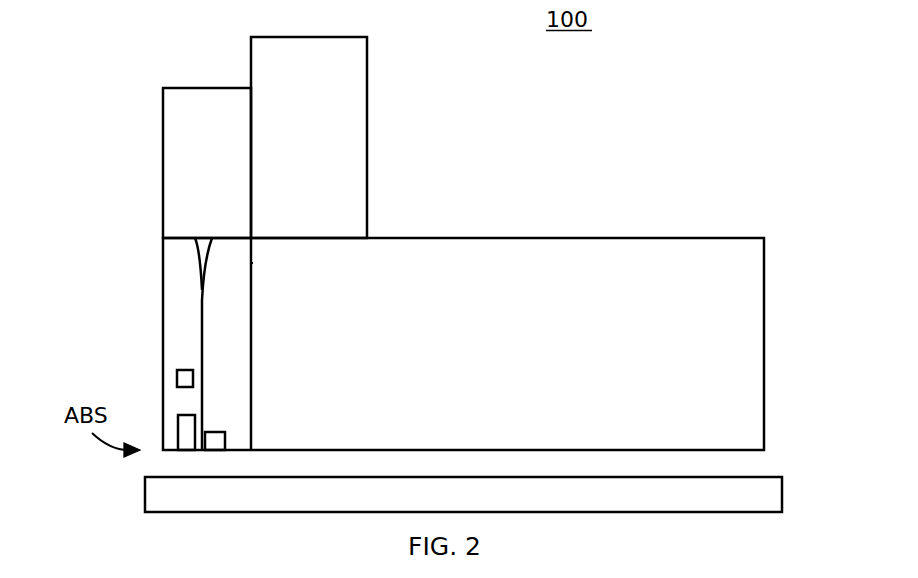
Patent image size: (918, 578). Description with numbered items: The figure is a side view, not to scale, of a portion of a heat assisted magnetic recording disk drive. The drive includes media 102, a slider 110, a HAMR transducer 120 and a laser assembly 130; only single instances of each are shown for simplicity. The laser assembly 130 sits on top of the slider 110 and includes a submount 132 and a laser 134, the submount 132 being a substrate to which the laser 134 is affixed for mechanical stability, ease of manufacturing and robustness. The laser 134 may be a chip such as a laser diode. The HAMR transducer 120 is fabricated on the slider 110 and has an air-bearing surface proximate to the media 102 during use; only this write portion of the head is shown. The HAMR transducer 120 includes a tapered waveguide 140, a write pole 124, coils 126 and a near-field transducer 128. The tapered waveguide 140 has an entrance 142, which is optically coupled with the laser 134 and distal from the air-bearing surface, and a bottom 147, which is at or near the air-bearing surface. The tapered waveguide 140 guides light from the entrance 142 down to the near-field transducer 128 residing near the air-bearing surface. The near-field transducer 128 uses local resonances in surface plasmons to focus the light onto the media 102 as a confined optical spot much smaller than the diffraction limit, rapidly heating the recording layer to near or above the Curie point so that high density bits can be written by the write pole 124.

The media 102 is at (145, 497).
The slider 110 is at (764, 309).
The HAMR transducer 120 is at (251, 263).
The write pole 124 is at (177, 415).
The coil(s) 126 is at (176, 370).
The near-field transducer (NFT) 128 is at (227, 438).
The laser assembly 130 is at (107, 143).
The submount 132 is at (367, 95).
The laser 134 is at (217, 88).
The tapered waveguide 140 is at (202, 340).
The entrance 142 is at (197, 245).
The bottom (exit) 147 is at (203, 450).